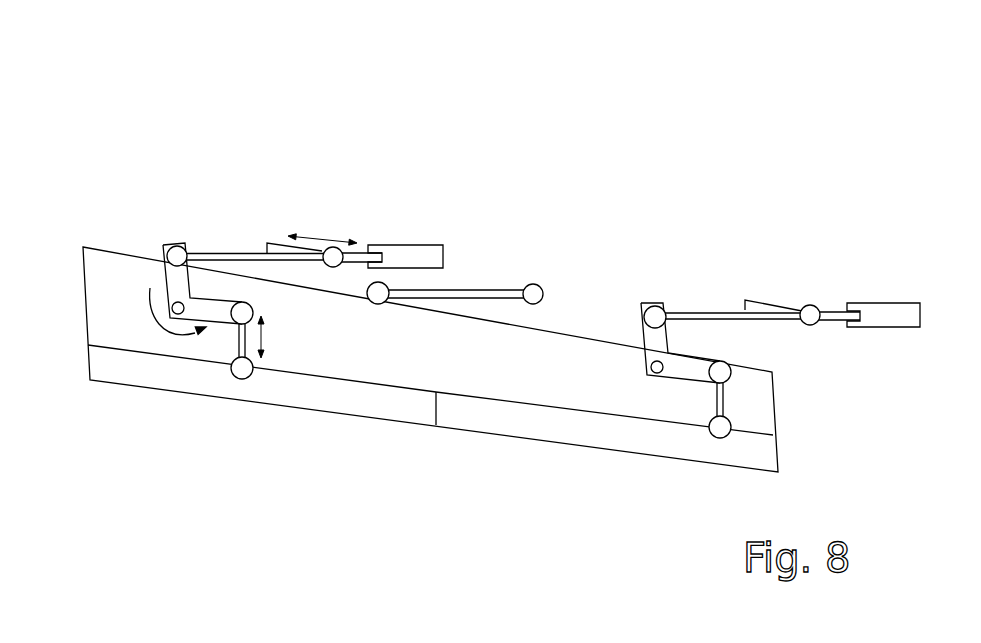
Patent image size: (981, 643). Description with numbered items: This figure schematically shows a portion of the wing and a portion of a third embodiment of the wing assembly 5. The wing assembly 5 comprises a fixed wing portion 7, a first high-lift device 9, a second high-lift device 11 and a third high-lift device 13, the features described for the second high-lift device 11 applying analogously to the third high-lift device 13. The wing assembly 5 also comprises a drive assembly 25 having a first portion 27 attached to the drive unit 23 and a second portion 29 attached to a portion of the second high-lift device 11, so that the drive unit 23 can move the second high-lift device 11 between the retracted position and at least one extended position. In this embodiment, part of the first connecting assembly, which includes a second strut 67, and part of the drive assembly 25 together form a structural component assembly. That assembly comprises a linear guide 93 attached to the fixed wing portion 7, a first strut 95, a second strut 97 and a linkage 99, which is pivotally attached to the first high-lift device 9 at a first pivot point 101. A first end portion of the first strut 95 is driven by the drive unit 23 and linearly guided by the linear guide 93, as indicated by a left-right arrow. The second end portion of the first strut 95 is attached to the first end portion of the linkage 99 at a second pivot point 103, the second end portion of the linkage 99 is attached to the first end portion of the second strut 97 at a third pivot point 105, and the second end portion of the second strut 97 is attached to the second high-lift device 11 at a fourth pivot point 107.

The wing assembly 5 is at (436, 111).
The fixed wing portion 7 is at (529, 184).
The first high-lift device 9 is at (575, 352).
The second high-lift device 11 is at (138, 375).
The third high-lift device 13 is at (582, 432).
The drive unit 23 is at (417, 250).
The drive assembly 25 is at (213, 121).
The first portion 27 is at (335, 247).
The second portion 29 is at (240, 425).
The second strut 67 is at (494, 288).
The linear guide 93 is at (275, 241).
The first strut 95 is at (252, 252).
The second strut 97 is at (237, 340).
The linkage 99 is at (177, 282).
The first pivot point 101 is at (172, 307).
The second pivot point 103 is at (172, 252).
The third pivot point 105 is at (238, 303).
The fourth pivot point 107 is at (242, 380).